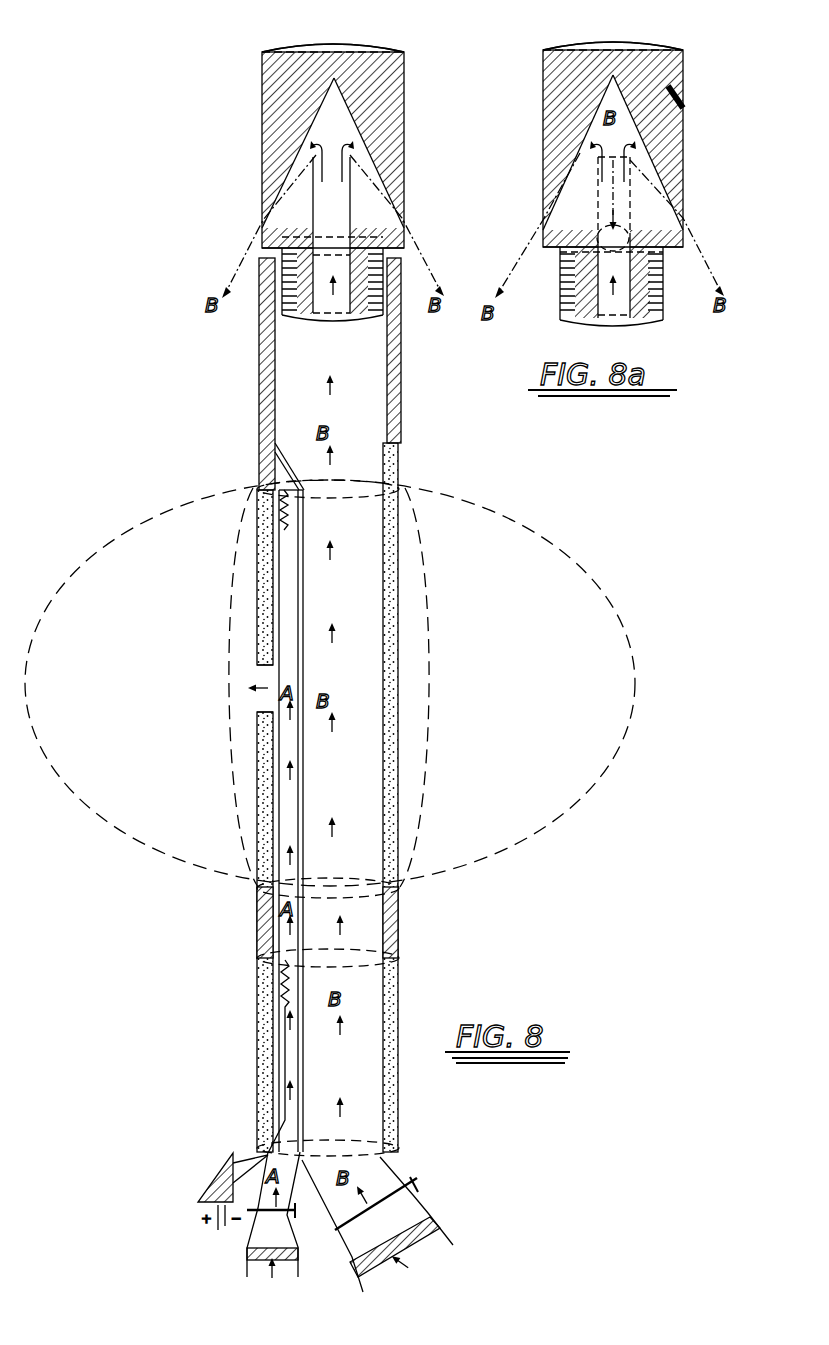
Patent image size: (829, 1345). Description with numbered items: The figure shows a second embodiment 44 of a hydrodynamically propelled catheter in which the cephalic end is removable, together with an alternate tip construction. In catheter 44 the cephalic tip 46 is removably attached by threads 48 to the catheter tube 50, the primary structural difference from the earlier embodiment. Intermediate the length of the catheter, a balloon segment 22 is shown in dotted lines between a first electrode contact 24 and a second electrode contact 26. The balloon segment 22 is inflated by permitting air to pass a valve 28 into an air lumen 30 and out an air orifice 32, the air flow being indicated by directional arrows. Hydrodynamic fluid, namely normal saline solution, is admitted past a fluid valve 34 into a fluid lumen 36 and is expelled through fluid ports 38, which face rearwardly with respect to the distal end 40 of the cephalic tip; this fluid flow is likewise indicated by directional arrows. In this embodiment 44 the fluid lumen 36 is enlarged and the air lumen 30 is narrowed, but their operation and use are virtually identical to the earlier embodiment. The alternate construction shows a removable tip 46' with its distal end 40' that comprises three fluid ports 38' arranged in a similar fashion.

In FIG. 8, the balloon segment 22 is at (228, 620).
In FIG. 8, the first electrode contact 24 is at (283, 473).
In FIG. 8, the second electrode contact 26 is at (285, 960).
In FIG. 8, the valve 28 is at (275, 1212).
In FIG. 8, the air lumen 30 is at (287, 812).
In FIG. 8, the air orifice 32 is at (260, 702).
In FIG. 8, the fluid valve 34 is at (413, 1183).
In FIG. 8, the fluid lumen 36 is at (360, 800).
In FIG. 8, the fluid ports 38 is at (328, 226).
In FIG. 8, the distal end 40 is at (332, 30).
In FIG. 8, the second embodiment of hydrodynamically propelled catheter 44 is at (289, 213).
In FIG. 8, the cephalic tip 46 is at (303, 146).
In FIG. 8, the threads 48 is at (282, 315).
In FIG. 8, the catheter tube 50 is at (259, 372).
In FIG. 8a, the fluid ports 38' is at (607, 219).
In FIG. 8a, the distal end 40' is at (609, 26).
In FIG. 8a, the removable tip 46' is at (574, 144).